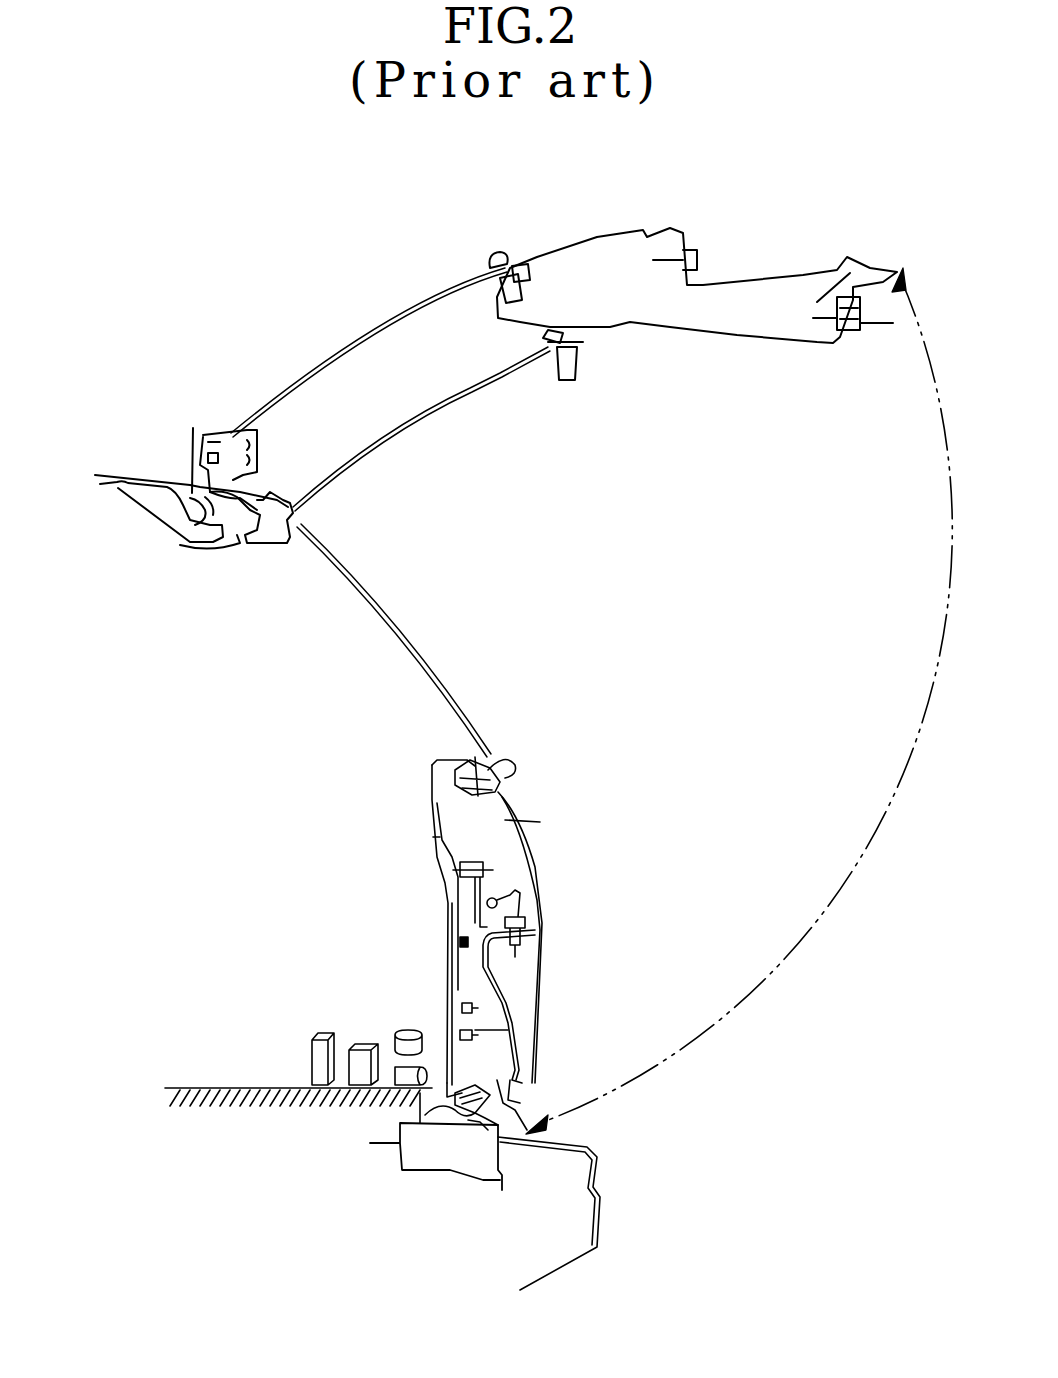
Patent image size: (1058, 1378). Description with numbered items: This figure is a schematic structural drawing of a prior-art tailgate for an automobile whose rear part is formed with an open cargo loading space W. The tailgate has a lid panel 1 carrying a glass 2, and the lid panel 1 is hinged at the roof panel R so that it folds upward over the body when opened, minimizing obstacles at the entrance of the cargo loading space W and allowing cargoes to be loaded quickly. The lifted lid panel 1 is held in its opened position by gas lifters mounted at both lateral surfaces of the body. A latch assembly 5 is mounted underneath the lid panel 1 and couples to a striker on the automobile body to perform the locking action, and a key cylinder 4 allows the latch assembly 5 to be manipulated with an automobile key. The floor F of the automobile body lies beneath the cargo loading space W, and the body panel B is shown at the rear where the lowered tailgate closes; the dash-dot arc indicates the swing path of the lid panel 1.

The roof panel R is at (140, 493).
The glass 2 is at (385, 608).
The key cylinder 4 is at (500, 760).
The lid panel 1 is at (525, 858).
The latch assembly 5 is at (483, 1100).
The cargo loading space W is at (300, 968).
The floor F is at (230, 1088).
The body panel B is at (563, 1218).